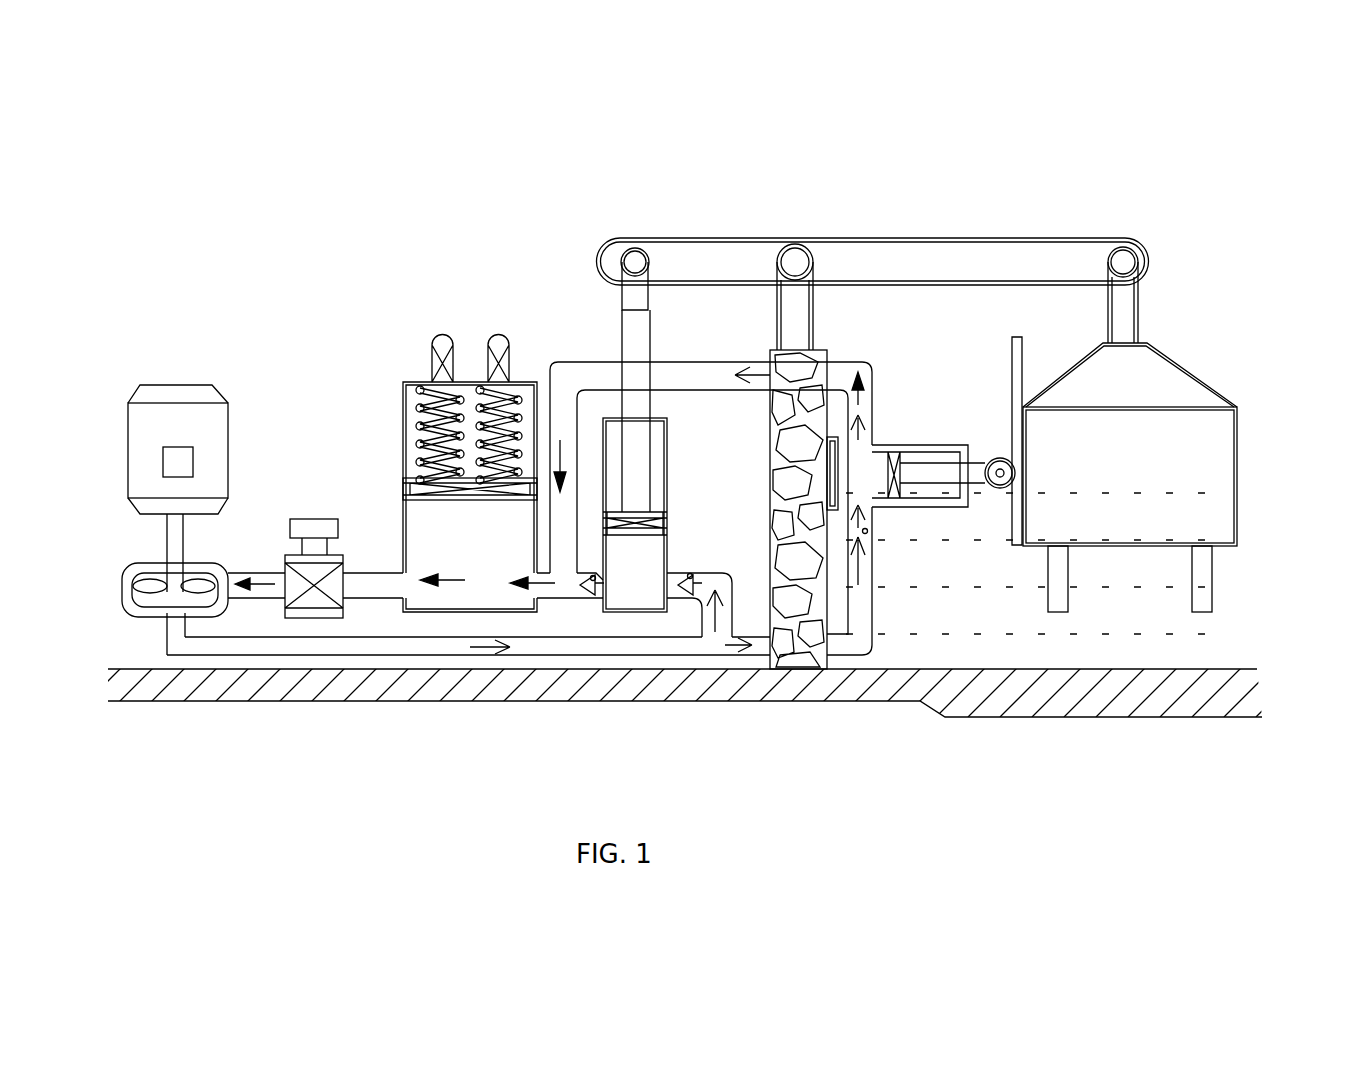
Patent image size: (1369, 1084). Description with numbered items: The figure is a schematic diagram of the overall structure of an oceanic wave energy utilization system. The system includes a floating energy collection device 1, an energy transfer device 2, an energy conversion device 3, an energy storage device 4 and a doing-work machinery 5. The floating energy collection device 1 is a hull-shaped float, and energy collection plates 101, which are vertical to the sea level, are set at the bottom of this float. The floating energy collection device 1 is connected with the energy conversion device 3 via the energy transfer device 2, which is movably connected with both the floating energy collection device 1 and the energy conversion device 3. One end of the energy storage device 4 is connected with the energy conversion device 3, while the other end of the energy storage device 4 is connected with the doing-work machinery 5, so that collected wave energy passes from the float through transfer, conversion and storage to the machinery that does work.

The floating energy collection device 1 is at (1133, 432).
The energy collection plates 101 is at (1203, 593).
The energy transfer device 2 is at (957, 262).
The energy conversion device 3 is at (903, 448).
The energy storage device 4 is at (470, 378).
The doing-work machinery 5 is at (173, 418).